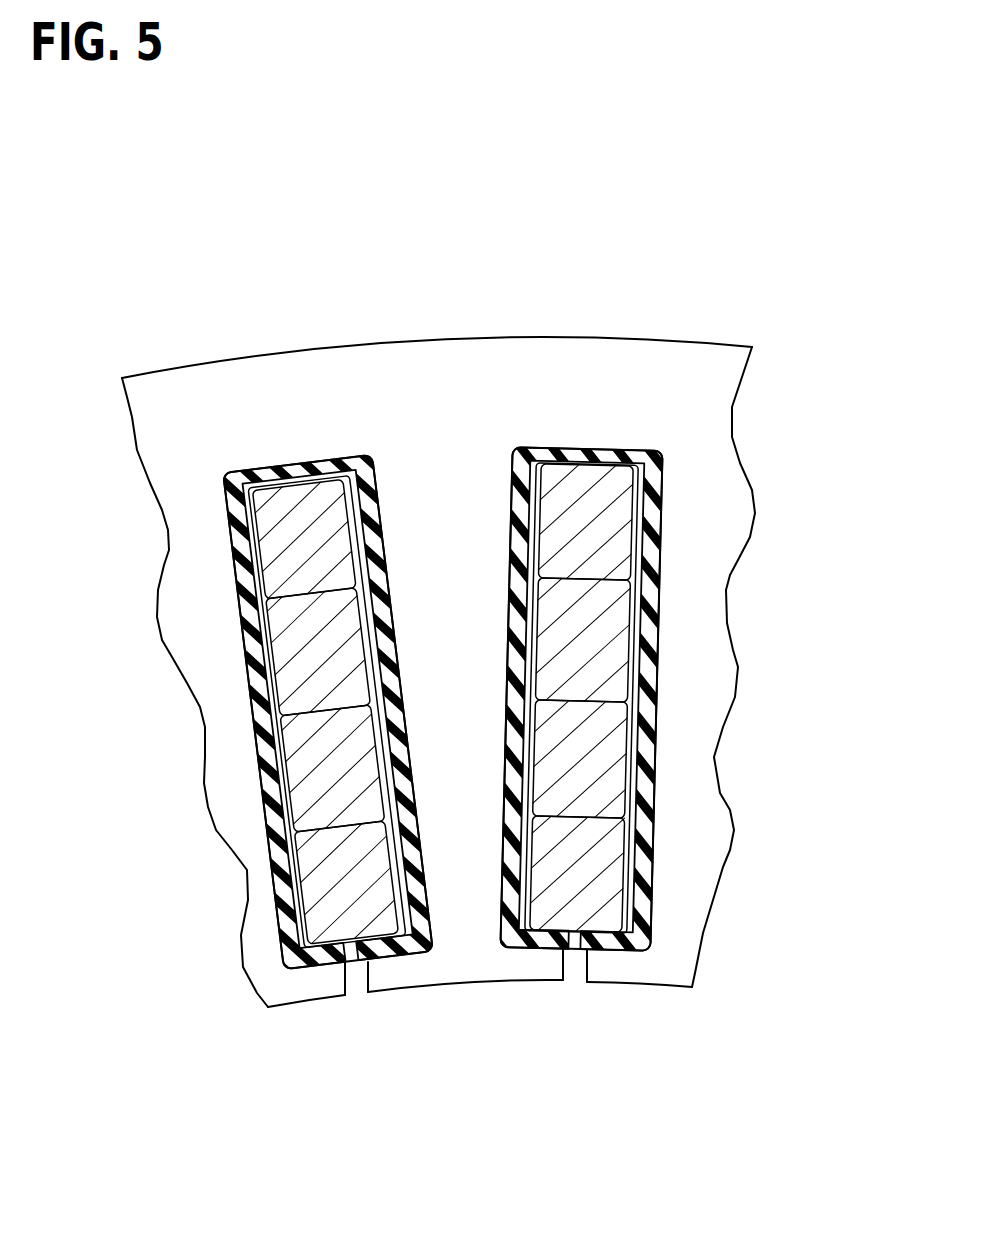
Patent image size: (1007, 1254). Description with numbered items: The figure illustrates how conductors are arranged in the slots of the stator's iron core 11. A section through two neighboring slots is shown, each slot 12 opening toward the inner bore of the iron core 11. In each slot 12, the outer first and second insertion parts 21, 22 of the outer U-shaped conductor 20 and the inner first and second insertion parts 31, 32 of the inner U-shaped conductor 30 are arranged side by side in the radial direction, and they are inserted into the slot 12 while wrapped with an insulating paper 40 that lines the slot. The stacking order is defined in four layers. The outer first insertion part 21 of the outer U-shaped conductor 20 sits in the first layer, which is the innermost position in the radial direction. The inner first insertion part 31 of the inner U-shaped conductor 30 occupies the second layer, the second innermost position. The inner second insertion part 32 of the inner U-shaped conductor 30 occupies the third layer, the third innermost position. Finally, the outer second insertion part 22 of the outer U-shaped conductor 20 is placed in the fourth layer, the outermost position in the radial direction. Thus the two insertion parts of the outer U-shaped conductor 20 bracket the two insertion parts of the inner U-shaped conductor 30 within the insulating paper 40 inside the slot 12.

The iron core 11 is at (432, 362).
The slot 12 is at (303, 463).
The outer U-shaped conductor 20 is at (601, 916).
The outer first insertion part 21 is at (317, 880).
The outer second insertion part 22 is at (273, 542).
The inner U-shaped conductor 30 is at (605, 780).
The inner first insertion part 31 is at (300, 770).
The inner second insertion part 32 is at (288, 653).
The insulating paper 40 is at (288, 958).